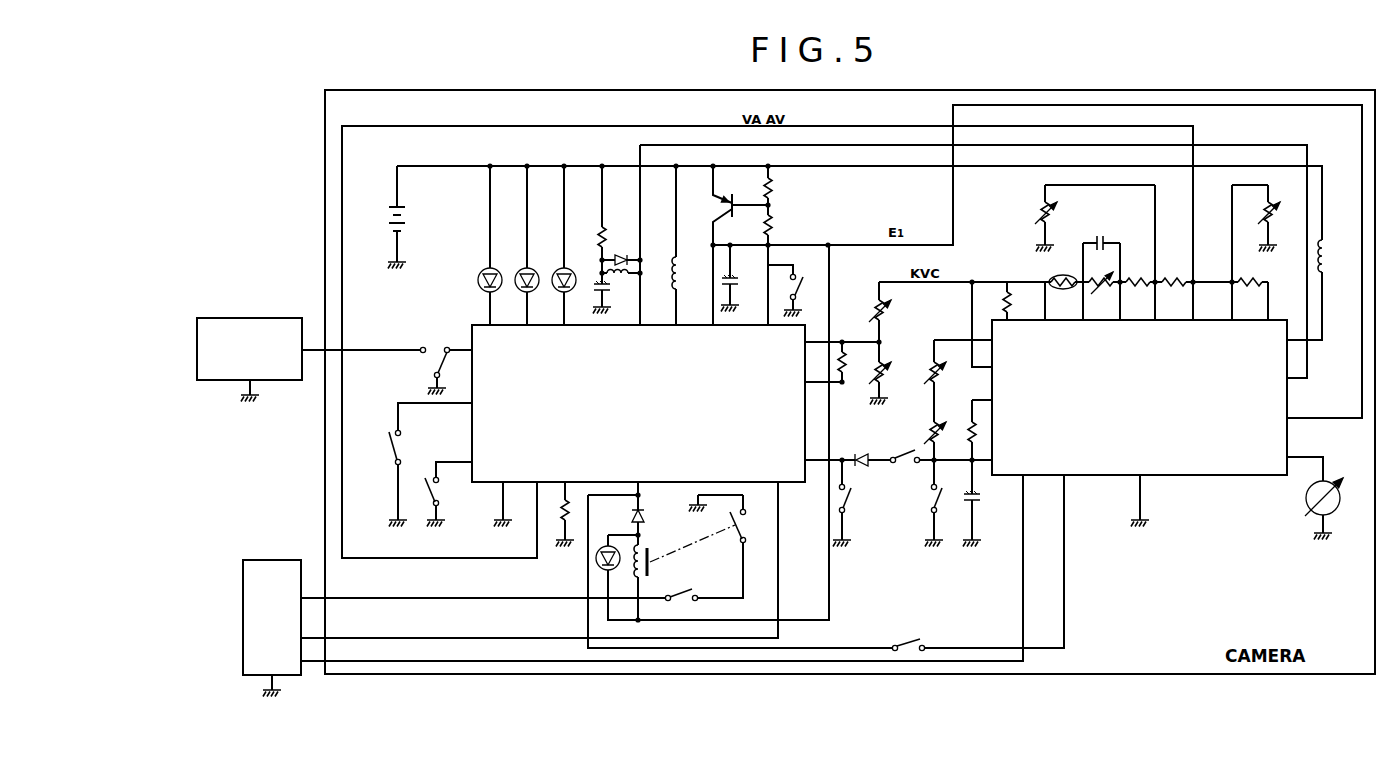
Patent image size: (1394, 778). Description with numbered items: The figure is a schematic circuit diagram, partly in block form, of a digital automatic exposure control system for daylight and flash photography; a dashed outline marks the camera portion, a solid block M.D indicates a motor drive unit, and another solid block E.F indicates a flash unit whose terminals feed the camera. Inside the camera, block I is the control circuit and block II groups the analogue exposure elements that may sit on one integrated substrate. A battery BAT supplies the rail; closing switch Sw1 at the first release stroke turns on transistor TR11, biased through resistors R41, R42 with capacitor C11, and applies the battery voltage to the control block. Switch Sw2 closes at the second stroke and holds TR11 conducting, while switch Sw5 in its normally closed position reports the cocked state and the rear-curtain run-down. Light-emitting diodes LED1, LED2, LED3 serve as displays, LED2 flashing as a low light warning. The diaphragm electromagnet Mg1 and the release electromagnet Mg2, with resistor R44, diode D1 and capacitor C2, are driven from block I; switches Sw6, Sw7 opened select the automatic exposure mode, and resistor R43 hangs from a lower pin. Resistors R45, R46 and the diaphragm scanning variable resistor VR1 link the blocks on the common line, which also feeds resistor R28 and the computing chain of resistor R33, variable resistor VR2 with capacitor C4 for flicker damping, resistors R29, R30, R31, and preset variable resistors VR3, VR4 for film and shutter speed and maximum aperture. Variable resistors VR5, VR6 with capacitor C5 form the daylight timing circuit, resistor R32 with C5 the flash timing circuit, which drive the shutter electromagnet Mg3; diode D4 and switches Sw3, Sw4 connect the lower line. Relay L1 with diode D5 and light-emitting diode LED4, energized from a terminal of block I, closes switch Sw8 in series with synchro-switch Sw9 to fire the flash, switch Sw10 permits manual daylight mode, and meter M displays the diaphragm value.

The block I is at (638, 403).
The block II is at (1139, 398).
The motor drive unit M.D is at (249, 349).
The flash unit E.F is at (272, 617).
The battery BAT is at (416, 220).
The light-emitting diode LED1 is at (502, 271).
The light-emitting diode LED2 is at (539, 271).
The light-emitting diode LED3 is at (576, 271).
The light-emitting diode LED4 is at (607, 544).
The resistor R44 is at (588, 237).
The diode D1 is at (621, 253).
The capacitor C2 is at (607, 290).
The camera release electromagnet Mg2 is at (612, 280).
The diaphragm electromagnet Mg1 is at (692, 273).
The transistor TR11 is at (720, 208).
The resistor R41 is at (782, 188).
The resistor R42 is at (782, 225).
The capacitor C11 is at (745, 277).
The switch Sw1 is at (810, 289).
The switch Sw5 is at (430, 354).
The switch Sw6 is at (409, 447).
The switch Sw7 is at (446, 491).
The resistor R43 is at (554, 510).
The diode D5 is at (649, 517).
The relay L1 is at (652, 564).
The switch Sw8 is at (711, 535).
The synchro-switch Sw9 is at (689, 588).
The switch Sw10 is at (917, 639).
The switch Sw2 is at (857, 498).
The diode D4 is at (864, 451).
The switch Sw3 is at (903, 451).
The switch Sw4 is at (922, 498).
The capacitor C5 is at (983, 495).
The resistor R45 is at (855, 362).
The resistor R46 is at (892, 314).
The diaphragm scanning variable resistor VR1 is at (891, 376).
The variable resistor VR5 is at (946, 378).
The variable resistor VR6 is at (922, 430).
The resistor R32 is at (959, 436).
The resistor R28 is at (1020, 303).
The resistor R33 is at (1063, 294).
The variable resistor VR2 is at (1101, 293).
The capacitor C4 is at (1100, 235).
The resistor R29 is at (1137, 296).
The resistor R30 is at (1174, 296).
The resistor R31 is at (1249, 296).
The variable resistor VR3 is at (1040, 213).
The variable resistor VR4 is at (1257, 213).
The shutter electromagnet Mg3 is at (1337, 246).
The meter M is at (1332, 497).